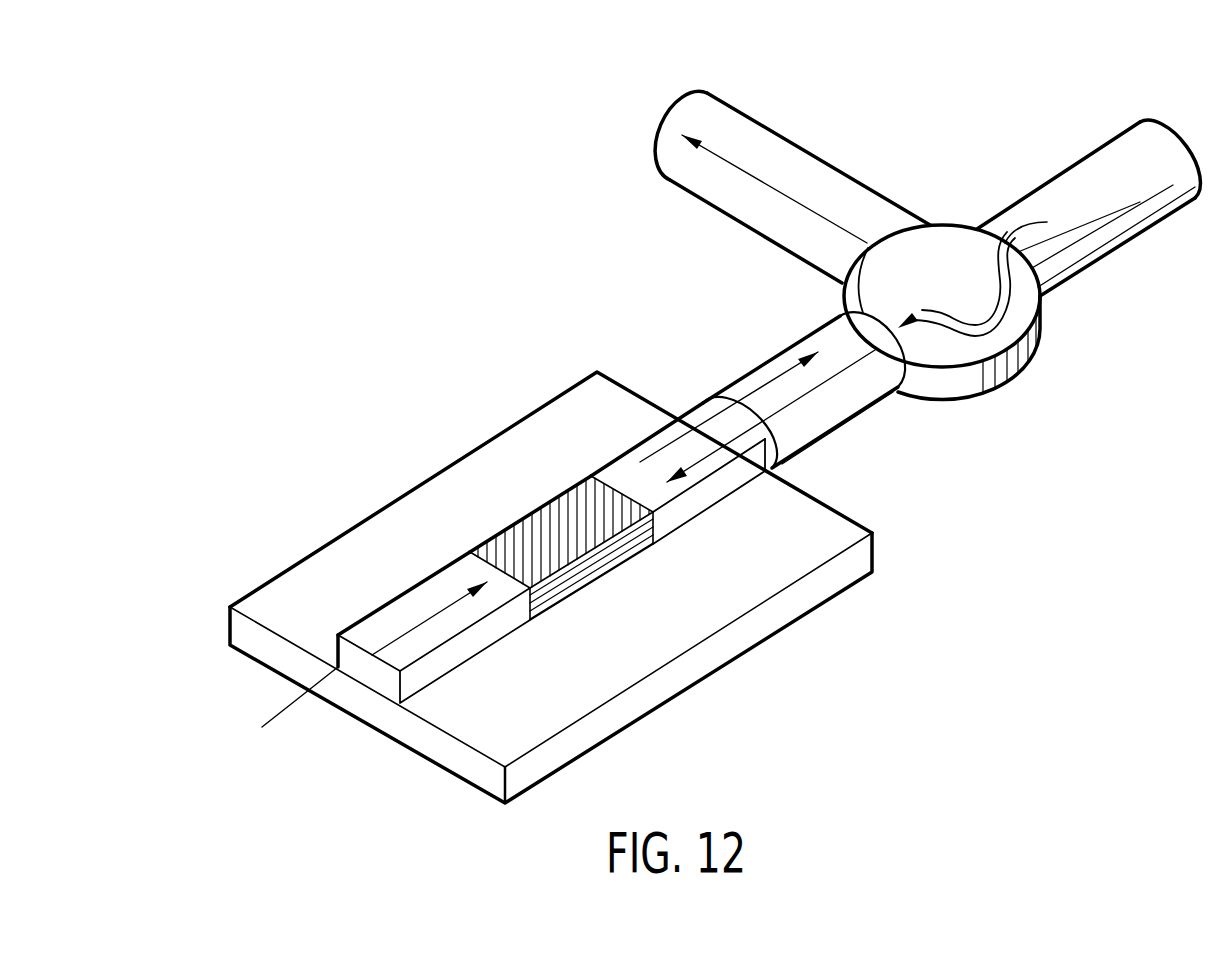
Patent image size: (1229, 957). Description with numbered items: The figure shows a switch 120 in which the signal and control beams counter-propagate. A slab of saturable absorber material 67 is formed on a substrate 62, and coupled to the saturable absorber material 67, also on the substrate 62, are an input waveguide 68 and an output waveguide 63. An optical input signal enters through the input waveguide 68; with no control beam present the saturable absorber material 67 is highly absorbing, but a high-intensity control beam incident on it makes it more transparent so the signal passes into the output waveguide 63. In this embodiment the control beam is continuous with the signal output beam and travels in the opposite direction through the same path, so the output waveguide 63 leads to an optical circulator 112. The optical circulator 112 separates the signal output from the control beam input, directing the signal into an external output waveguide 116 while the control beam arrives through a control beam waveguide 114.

The substrate 62 is at (670, 680).
The output waveguide 63 is at (678, 432).
The saturable absorber material 67 is at (542, 525).
The input waveguide 68 is at (418, 677).
The optical circulator 112 is at (945, 388).
The control beam waveguide 114 is at (1103, 223).
The external output waveguide 116 is at (798, 172).
The switch 120 is at (562, 168).